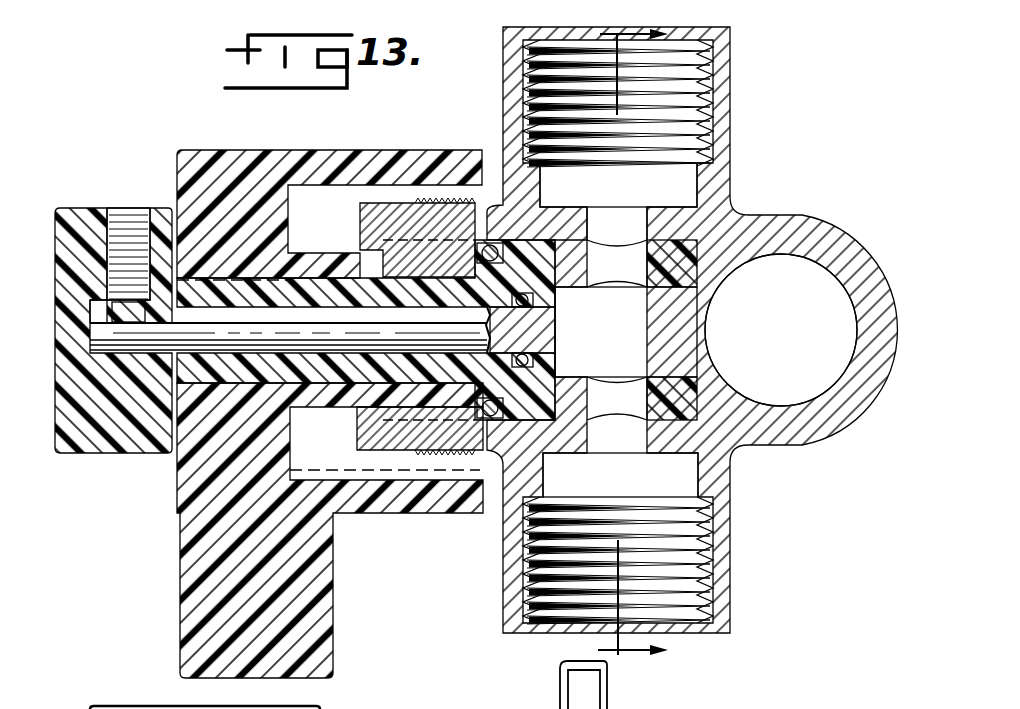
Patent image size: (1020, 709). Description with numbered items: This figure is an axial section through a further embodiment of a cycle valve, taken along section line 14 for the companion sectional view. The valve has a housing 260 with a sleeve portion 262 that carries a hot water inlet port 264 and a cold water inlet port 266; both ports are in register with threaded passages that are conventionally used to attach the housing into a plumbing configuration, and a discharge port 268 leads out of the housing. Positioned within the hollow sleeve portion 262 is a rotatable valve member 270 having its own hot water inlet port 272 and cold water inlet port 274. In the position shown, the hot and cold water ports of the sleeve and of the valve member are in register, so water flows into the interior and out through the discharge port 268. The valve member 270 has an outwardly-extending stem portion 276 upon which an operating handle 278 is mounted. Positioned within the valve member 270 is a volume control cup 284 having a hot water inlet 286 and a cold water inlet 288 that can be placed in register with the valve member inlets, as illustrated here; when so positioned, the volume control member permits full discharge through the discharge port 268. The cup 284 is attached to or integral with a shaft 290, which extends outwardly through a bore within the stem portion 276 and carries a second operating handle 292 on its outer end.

The section line 14- 14 is at (616, 341).
The housing 260 is at (728, 203).
The sleeve portion 262 is at (453, 440).
The hot water inlet port 264 is at (618, 222).
The cold water inlet port 266 is at (627, 443).
The discharge port 268 is at (781, 330).
The rotatable valve member 270 is at (545, 240).
The hot water inlet port 272 is at (616, 263).
The cold water inlet port 274 is at (616, 398).
The stem portion 276 is at (335, 285).
The operating handle 278 is at (200, 568).
The volume control cup 284 is at (623, 332).
The hot water inlet 286 is at (640, 285).
The cold water inlet 288 is at (640, 378).
The shaft 290 is at (325, 345).
The operating handle 292 is at (127, 440).